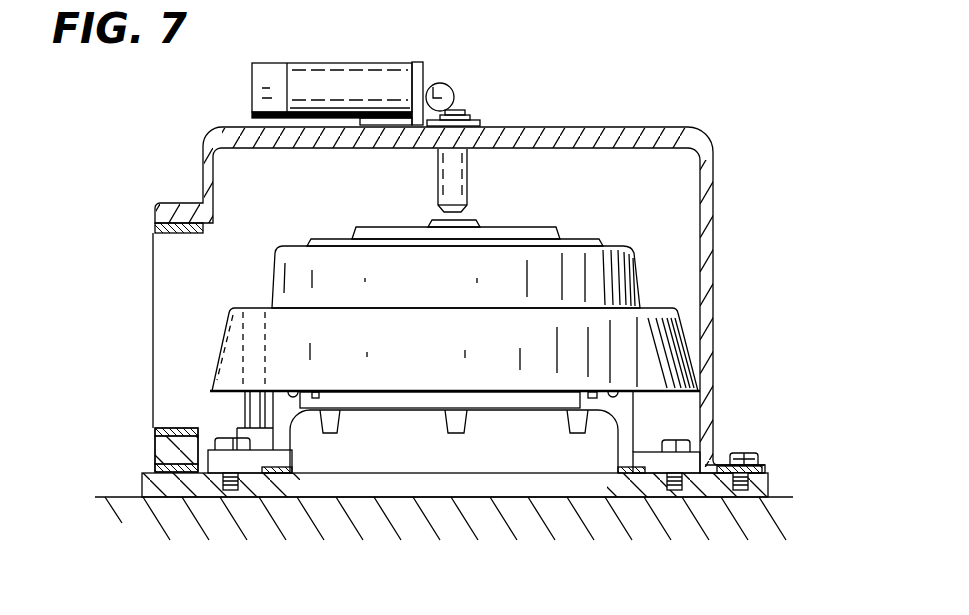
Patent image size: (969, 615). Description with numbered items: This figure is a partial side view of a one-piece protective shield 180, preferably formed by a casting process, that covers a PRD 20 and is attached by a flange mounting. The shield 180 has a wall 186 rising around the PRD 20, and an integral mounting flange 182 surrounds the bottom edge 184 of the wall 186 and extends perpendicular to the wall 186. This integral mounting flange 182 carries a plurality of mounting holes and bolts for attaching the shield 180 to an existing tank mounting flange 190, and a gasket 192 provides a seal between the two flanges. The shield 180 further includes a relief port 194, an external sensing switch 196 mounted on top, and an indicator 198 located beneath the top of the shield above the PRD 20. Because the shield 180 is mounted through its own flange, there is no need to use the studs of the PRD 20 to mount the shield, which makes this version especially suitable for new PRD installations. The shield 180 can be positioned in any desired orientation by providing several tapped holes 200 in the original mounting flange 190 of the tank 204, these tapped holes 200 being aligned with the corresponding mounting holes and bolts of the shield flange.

The protective shield 180 is at (592, 107).
The PRD 20 is at (585, 220).
The external sensing switch 196 is at (357, 77).
The indicator 198 is at (464, 198).
The relief port 194 is at (153, 315).
The gasket 192 is at (157, 468).
The tank mounting flange 190 is at (170, 488).
The tapped holes 200 is at (753, 508).
The tank 204 is at (570, 520).
The bottom edge 184 is at (717, 465).
The mounting flange 182 is at (762, 465).
The wall 186 is at (713, 280).